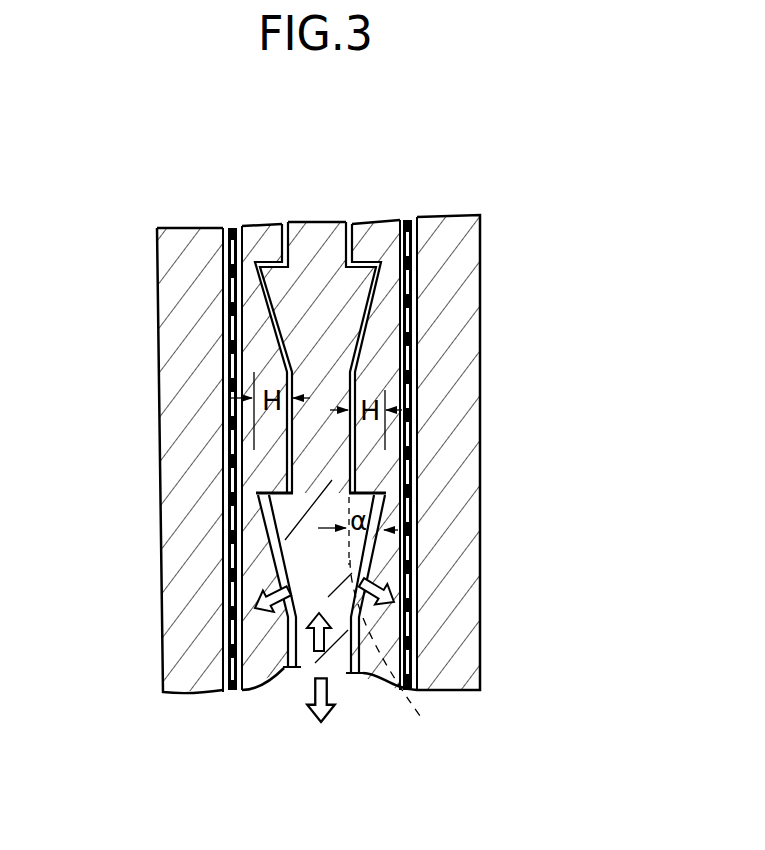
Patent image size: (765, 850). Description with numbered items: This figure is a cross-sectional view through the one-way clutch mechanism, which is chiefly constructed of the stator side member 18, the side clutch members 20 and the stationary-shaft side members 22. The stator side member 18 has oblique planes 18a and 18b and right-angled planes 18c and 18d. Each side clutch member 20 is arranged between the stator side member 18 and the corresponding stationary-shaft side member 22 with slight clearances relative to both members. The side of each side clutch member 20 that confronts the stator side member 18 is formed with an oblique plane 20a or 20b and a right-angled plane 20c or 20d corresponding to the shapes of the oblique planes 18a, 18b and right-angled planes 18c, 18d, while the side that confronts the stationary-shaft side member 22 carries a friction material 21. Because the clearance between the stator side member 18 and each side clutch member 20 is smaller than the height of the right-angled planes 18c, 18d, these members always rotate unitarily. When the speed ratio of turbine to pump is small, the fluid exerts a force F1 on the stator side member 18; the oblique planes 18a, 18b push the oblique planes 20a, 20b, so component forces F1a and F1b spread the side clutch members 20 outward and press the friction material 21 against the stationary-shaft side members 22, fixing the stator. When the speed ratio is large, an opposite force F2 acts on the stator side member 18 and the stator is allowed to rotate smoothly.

The stator side member 18 is at (318, 248).
The oblique plane 18a is at (370, 572).
The oblique plane 18b is at (283, 612).
The right-angled plane 18c is at (370, 482).
The right-angled plane 18d is at (278, 480).
The side clutch member 20 is at (262, 243).
The oblique plane 20a is at (368, 598).
The oblique plane 20b is at (292, 560).
The right-angled plane 20c is at (368, 506).
The right-angled plane 20d is at (276, 506).
The friction material 21 is at (233, 460).
The stationary-shaft side member 22 is at (450, 281).
The force F1 is at (330, 688).
The component force F1a is at (440, 650).
The component force F1b is at (285, 620).
The force F2 is at (412, 651).